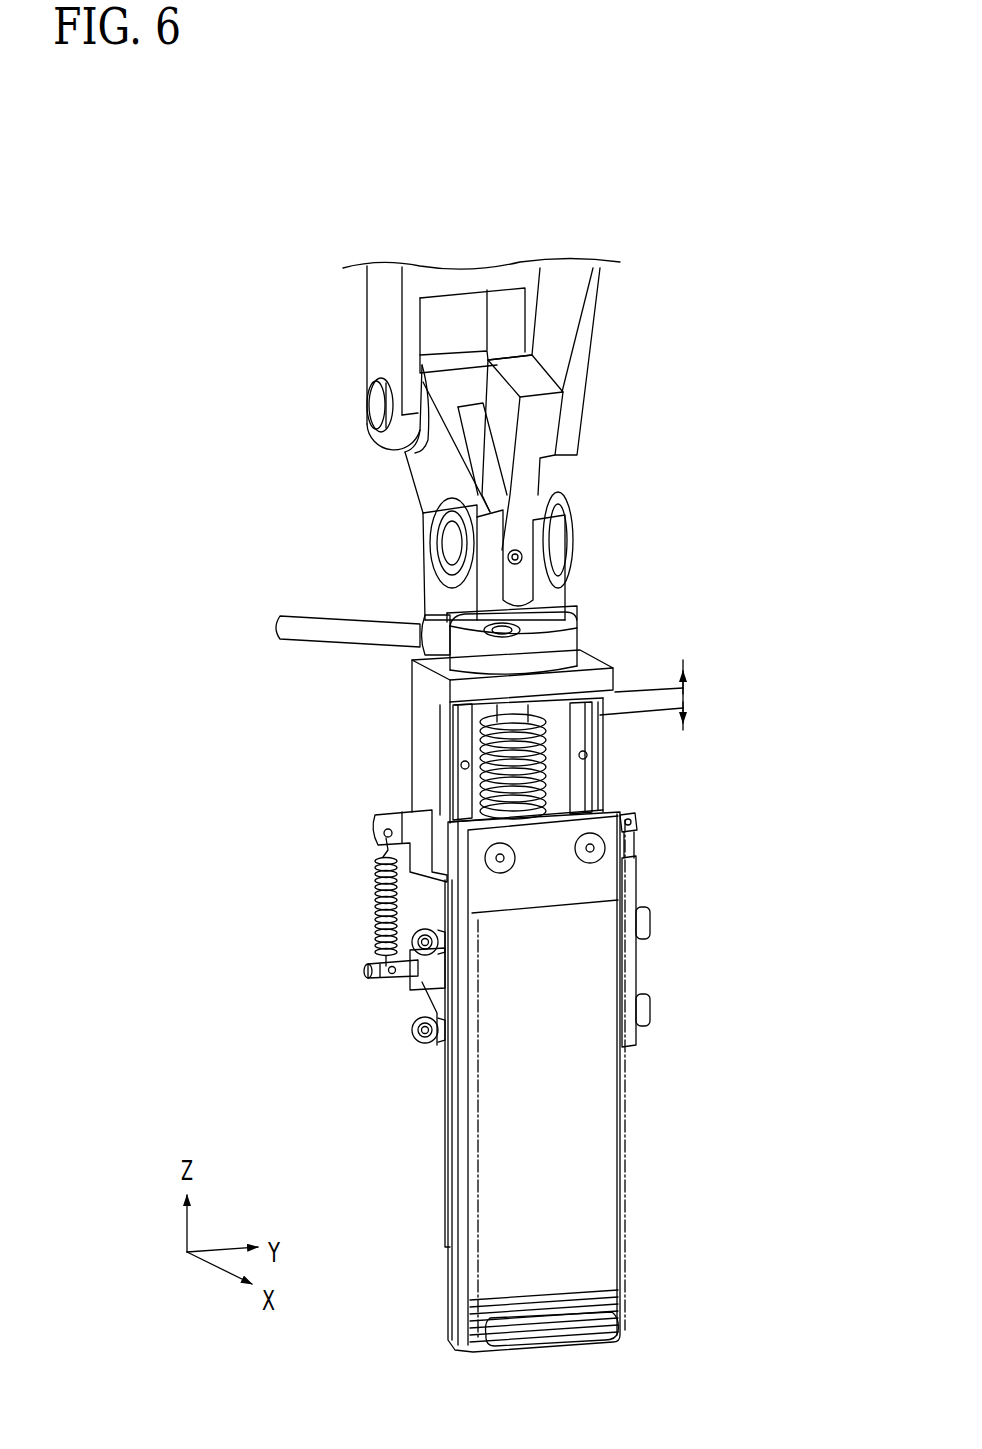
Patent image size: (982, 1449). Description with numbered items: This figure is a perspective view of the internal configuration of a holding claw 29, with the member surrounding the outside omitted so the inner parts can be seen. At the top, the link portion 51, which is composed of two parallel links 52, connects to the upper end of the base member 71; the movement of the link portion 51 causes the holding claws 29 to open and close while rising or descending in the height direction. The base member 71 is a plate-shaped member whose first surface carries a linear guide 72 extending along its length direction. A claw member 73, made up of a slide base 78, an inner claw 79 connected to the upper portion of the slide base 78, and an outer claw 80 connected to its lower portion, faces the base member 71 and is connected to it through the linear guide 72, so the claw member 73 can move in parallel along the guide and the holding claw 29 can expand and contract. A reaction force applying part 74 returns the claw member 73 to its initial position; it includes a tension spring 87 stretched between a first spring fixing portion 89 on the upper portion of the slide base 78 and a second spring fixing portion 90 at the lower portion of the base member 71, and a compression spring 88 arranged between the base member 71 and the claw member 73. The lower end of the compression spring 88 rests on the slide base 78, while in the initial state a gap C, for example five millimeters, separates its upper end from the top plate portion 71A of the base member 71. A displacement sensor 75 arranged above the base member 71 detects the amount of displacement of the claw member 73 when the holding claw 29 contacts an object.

The link portion 51 is at (352, 355).
The parallel link 52 is at (580, 362).
The holding claw 29 is at (277, 685).
The displacement sensor 75 is at (570, 636).
The base member 71 is at (413, 708).
The top plate portion 71A is at (615, 680).
The gap C is at (651, 695).
The reaction force applying part 74 is at (358, 746).
The linear guide 72 is at (455, 790).
The compression spring 88 is at (588, 790).
The claw member 73 is at (655, 880).
The inner claw 79 is at (605, 1140).
The slide base 78 is at (450, 1110).
The outer claw 80 is at (452, 1318).
The first spring fixing portion 89 is at (385, 833).
The tension spring 87 is at (372, 905).
The second spring fixing portion 90 is at (378, 975).